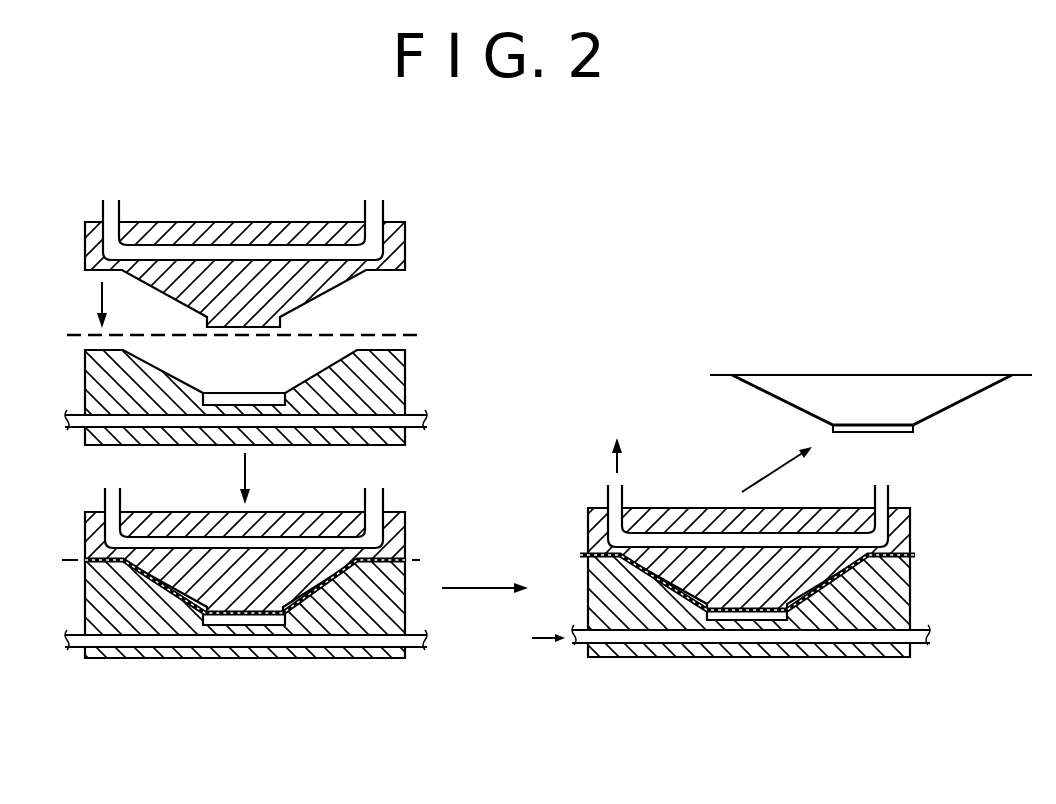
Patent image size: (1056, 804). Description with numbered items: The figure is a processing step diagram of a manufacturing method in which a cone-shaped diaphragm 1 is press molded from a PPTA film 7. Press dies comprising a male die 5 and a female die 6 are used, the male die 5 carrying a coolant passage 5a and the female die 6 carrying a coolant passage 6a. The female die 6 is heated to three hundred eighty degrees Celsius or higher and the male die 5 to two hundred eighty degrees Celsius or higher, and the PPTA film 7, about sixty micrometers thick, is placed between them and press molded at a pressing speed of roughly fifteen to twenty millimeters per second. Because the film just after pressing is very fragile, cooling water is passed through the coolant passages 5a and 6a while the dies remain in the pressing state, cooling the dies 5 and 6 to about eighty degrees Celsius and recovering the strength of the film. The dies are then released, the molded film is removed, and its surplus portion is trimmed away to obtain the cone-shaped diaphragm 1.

The cone-shaped diaphragm 1 is at (783, 388).
The male die 5 is at (405, 241).
The coolant passage 5a is at (313, 252).
The female die 6 is at (405, 367).
The coolant passage 6a is at (382, 412).
The PPTA film 7 is at (410, 333).